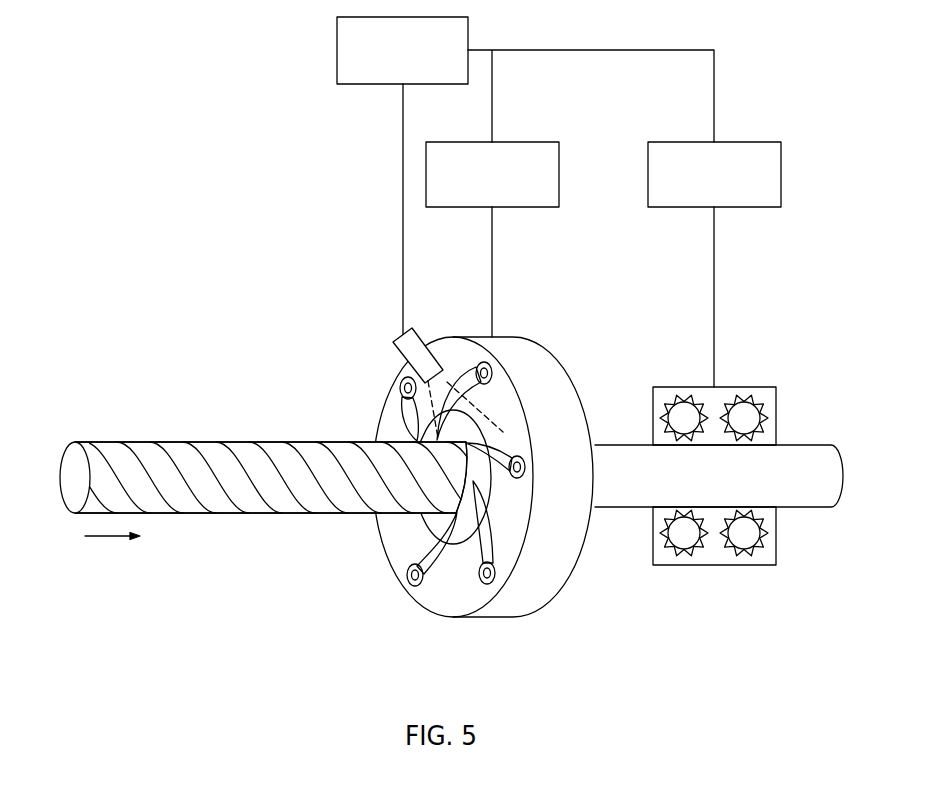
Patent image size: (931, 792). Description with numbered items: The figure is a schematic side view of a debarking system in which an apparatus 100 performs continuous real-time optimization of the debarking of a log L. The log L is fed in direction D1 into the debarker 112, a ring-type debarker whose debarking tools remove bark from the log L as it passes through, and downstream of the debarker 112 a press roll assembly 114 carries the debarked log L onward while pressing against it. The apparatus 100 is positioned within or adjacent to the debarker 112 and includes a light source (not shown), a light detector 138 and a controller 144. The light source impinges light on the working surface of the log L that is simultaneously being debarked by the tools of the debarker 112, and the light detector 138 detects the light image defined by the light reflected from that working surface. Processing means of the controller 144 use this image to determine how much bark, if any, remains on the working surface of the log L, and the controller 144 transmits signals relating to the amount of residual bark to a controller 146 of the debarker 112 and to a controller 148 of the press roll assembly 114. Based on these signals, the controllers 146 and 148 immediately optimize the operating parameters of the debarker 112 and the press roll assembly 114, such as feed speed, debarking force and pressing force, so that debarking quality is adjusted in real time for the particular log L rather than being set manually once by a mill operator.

The apparatus 100 is at (371, 321).
The debarker 112 is at (322, 511).
The press roll assembly 114 is at (715, 565).
The light detector 138 is at (393, 346).
The controller 144 is at (380, 63).
The controller of debarker 146 is at (472, 186).
The controller of press roll assembly 148 is at (694, 186).
The log L is at (270, 514).
The feed direction D1 is at (105, 541).